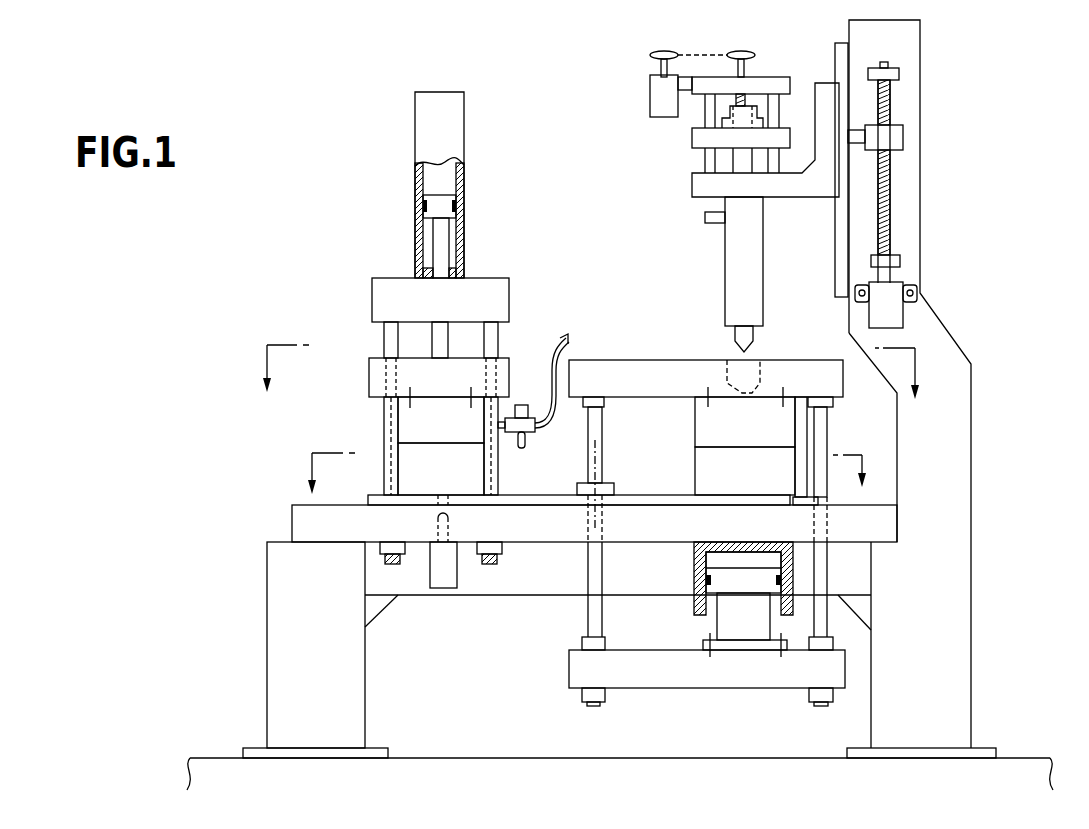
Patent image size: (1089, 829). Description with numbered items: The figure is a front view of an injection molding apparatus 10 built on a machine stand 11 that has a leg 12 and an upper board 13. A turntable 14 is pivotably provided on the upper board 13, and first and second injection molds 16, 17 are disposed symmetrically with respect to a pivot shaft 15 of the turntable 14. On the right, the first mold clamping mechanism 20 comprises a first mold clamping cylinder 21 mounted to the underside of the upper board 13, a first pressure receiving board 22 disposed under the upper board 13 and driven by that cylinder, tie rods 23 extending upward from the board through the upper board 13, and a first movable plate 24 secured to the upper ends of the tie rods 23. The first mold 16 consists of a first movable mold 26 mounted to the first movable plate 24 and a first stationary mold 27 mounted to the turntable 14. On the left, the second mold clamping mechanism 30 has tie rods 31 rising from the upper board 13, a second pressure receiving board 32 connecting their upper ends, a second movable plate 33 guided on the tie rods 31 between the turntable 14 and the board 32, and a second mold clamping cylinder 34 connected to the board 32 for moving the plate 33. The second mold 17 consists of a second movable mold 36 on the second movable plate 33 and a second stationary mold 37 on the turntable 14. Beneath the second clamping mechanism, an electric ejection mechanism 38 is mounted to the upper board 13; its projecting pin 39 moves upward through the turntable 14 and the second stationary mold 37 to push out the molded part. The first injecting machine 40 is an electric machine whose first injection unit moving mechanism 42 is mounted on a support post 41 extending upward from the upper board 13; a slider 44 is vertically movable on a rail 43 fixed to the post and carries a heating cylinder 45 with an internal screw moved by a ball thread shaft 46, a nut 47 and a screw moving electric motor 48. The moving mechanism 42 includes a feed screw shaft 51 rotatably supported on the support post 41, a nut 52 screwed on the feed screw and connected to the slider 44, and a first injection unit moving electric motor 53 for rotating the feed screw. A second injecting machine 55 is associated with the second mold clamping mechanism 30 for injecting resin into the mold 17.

The injection molding apparatus 10 is at (290, 103).
The machine stand 11 is at (258, 567).
The leg 12 is at (283, 642).
The upper board 13 is at (308, 523).
The turntable 14 is at (535, 497).
The pivot shaft 15 is at (595, 460).
The first injection mold 16 is at (808, 433).
The second injection mold 17 is at (384, 413).
The first mold clamping mechanism 20 is at (619, 354).
The first mold clamping cylinder 21 is at (695, 575).
The first pressure receiving board 22 is at (695, 678).
The tie rods 23 is at (597, 437).
The first movable plate 24 is at (653, 378).
The first movable mold 26 is at (695, 413).
The first stationary mold 27 is at (695, 480).
The second mold clamping mechanism 30 is at (382, 269).
The tie rods 31 is at (493, 342).
The second pressure receiving board 32 is at (483, 292).
The second movable plate 33 is at (373, 380).
The second mold clamping cylinder 34 is at (452, 118).
The second movable mold 36 is at (418, 430).
The second stationary mold 37 is at (410, 473).
The electric ejection mechanism 38 is at (443, 580).
The projecting pin 39 is at (450, 517).
The first injecting machine 40 is at (702, 238).
The support post 41 is at (928, 328).
The first injection unit moving mechanism 42 is at (903, 173).
The rail 43 is at (835, 252).
The slider 44 is at (787, 187).
The heating cylinder 45 is at (733, 265).
The ball thread shaft 46 is at (733, 98).
The nut 47 is at (727, 122).
The screw moving electric motor 48 is at (650, 98).
The feed screw shaft 51 is at (892, 199).
The nut 52 is at (892, 137).
The first injection unit moving electric motor 53 is at (893, 287).
The second injecting machine 55 is at (530, 405).